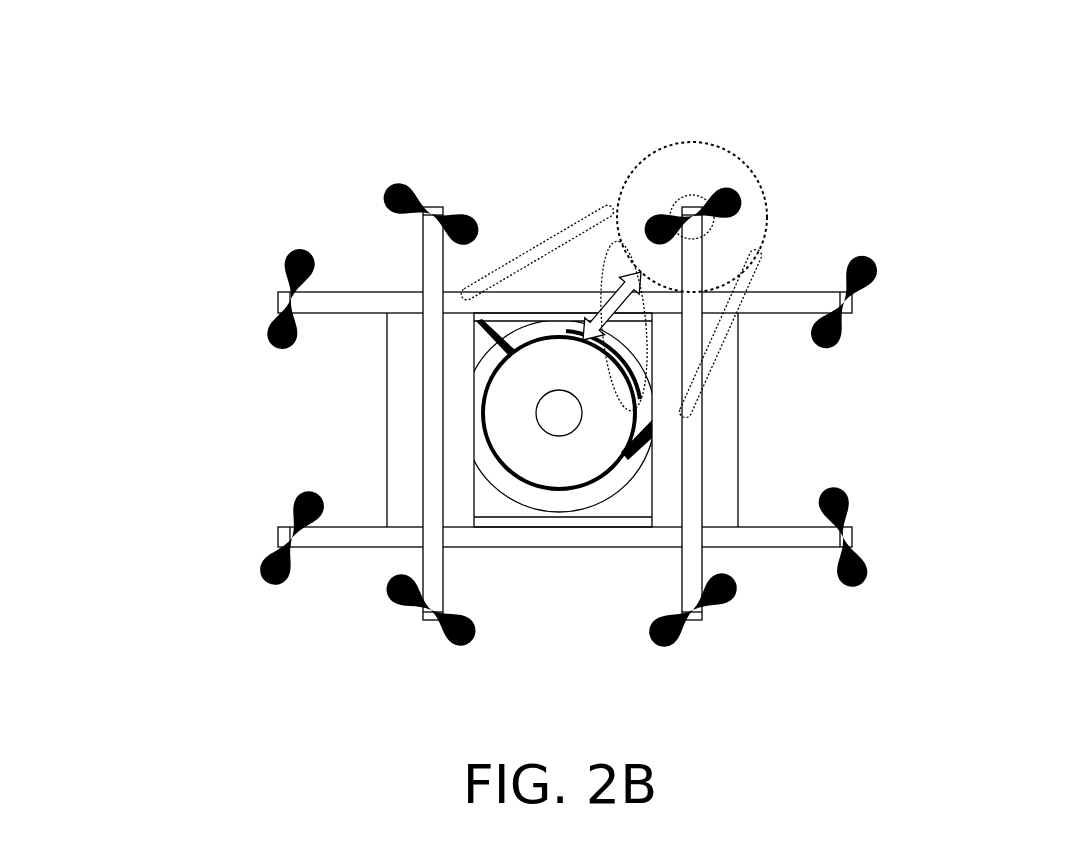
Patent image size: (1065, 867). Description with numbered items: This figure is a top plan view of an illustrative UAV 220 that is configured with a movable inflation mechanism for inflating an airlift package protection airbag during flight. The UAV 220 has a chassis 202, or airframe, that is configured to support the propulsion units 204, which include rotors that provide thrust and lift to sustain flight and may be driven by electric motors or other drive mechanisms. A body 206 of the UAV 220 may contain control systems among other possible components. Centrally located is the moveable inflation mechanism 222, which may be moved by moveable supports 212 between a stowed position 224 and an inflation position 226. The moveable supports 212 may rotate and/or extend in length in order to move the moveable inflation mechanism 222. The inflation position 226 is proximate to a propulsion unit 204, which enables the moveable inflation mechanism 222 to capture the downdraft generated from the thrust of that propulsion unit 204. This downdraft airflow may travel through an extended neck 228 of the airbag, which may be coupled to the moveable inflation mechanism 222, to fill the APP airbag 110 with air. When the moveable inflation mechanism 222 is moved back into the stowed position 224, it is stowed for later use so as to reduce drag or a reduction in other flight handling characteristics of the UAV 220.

The UAV 220 is at (609, 378).
The chassis 202 is at (348, 320).
The propulsion unit 204 is at (742, 188).
The body 206 is at (372, 416).
The APP airbag 110 is at (607, 490).
The moveable inflation mechanism 222 is at (549, 462).
The stowed position 224 is at (646, 400).
The inflation position 226 is at (632, 149).
The extended neck 228 is at (607, 252).
The moveable support 212 is at (568, 232).